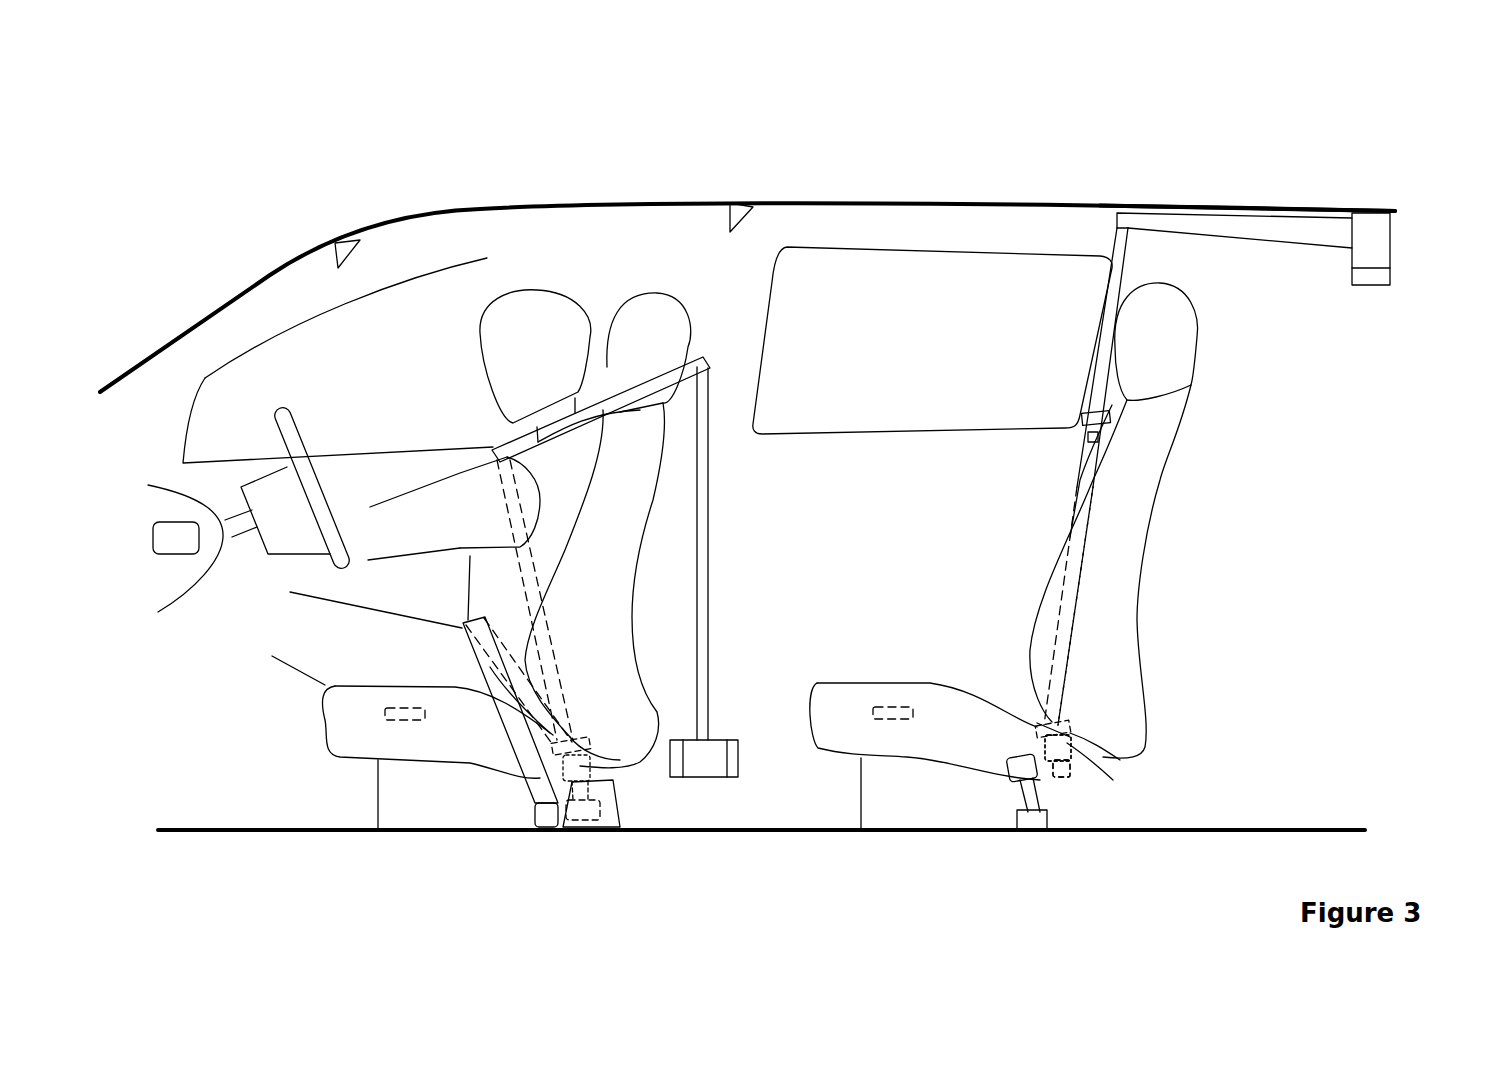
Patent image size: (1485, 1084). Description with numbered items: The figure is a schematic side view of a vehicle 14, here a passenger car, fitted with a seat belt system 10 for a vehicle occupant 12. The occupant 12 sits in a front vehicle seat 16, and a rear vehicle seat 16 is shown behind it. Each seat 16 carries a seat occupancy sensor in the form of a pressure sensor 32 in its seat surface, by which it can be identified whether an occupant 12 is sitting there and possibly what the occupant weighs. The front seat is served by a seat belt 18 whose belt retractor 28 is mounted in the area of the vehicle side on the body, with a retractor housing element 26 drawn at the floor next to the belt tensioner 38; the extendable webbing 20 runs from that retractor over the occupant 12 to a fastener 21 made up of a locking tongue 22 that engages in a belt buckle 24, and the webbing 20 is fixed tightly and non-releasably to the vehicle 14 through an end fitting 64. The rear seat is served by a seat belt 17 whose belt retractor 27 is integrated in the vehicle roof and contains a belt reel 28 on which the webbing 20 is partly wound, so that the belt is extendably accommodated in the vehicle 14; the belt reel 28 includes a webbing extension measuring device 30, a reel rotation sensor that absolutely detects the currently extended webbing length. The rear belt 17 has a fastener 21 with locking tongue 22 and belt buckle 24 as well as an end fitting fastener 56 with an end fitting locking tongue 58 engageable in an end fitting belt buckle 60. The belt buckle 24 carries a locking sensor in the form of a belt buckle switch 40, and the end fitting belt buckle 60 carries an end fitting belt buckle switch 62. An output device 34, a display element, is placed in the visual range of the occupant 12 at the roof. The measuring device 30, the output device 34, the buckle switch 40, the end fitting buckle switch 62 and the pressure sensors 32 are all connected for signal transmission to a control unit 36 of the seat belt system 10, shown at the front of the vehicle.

The seat belt system 10 is at (1215, 192).
The vehicle occupant 12 is at (490, 300).
The vehicle 14 is at (253, 275).
The vehicle seat 16 is at (345, 772).
The seat belt 17 is at (1170, 203).
The seat belt 18 is at (655, 355).
The extendable webbing 20 is at (460, 690).
The fastener 21 is at (583, 792).
The locking tongue 22 is at (490, 667).
The belt buckle 24 is at (565, 765).
The retractor 26 is at (693, 780).
The belt retractor 27 is at (1396, 294).
The belt reel 28 is at (709, 750).
The webbing extension measuring device 30 is at (732, 767).
The pressure sensor 32 is at (407, 727).
The output device 34 is at (345, 250).
The control unit 36 is at (165, 533).
The belt tensioner 38 is at (675, 770).
The belt buckle switch 40 is at (1032, 828).
The end fitting fastener 56 is at (1047, 775).
The end fitting locking tongue 58 is at (1090, 770).
The end fitting belt buckle 60 is at (1062, 777).
The end fitting belt buckle switch 62 is at (1070, 765).
The end fitting 64 is at (548, 813).